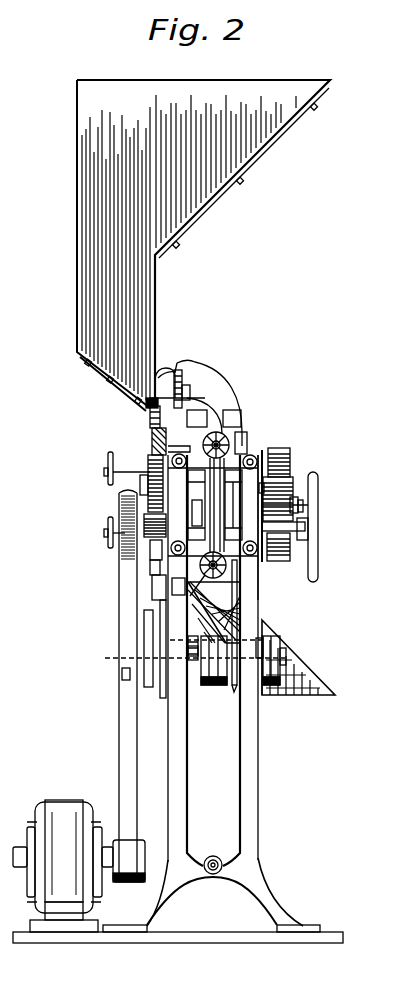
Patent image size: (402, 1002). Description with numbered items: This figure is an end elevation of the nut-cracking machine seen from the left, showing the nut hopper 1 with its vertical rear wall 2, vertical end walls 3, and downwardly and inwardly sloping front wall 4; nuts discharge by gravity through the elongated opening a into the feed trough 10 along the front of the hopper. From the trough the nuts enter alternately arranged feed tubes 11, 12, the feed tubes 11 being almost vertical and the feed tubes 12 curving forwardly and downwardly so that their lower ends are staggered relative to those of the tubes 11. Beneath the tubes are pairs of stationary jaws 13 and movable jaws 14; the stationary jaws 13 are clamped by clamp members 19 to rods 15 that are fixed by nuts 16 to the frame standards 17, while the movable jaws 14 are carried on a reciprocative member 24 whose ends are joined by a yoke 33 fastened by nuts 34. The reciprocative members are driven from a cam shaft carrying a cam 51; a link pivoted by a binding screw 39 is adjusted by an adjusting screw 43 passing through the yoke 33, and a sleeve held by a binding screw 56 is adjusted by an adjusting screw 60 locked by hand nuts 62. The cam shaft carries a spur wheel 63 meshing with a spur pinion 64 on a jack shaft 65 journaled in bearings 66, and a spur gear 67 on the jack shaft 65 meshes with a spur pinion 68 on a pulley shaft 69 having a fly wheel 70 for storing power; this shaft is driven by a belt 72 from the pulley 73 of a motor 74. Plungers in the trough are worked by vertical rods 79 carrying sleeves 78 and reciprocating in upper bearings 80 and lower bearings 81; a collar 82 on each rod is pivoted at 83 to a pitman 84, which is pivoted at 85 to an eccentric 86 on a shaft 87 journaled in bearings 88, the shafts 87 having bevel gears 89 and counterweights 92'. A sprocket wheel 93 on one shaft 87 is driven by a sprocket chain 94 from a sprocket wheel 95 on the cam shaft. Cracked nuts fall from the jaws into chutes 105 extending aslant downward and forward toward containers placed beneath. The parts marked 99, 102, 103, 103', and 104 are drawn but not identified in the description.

The nut hopper 1 is at (74, 203).
The vertical rear wall 2 is at (77, 166).
The vertical end walls 3 is at (100, 246).
The sloping front wall 4 is at (265, 150).
The elongated opening a is at (158, 292).
The feed trough 10 is at (164, 366).
The gate plate 99 is at (183, 368).
The gate slide 102 is at (185, 379).
The gate block 103 is at (227, 389).
The gate stop 103' is at (125, 406).
The gate lever 104 is at (150, 418).
The feed tubes 12 is at (240, 401).
The feed tubes 11 is at (231, 432).
The hand nuts 62 is at (250, 448).
The adjusting screw 60 is at (246, 438).
The nuts 34 is at (228, 458).
The nuts 16 is at (264, 460).
The rods 15 is at (213, 493).
The reciprocative member 24 is at (213, 511).
The spur wheel 63 is at (291, 456).
The bearings 66 is at (291, 485).
The spur pinion 64 is at (298, 492).
The jack shaft 65 is at (303, 500).
The fly wheel 70 is at (320, 500).
The clamp member 19 is at (300, 506).
The pulley shaft 69 is at (300, 530).
The binding screw 56 is at (108, 472).
The binding screw 39 is at (108, 533).
The spur gear 67 is at (149, 458).
The upper bearings 80 is at (152, 442).
The vertical rods 79 is at (152, 430).
The spur pinion 68 is at (144, 521).
The belt 72 is at (119, 726).
The pulley 73 is at (143, 852).
The sleeves 78 is at (150, 551).
The pivot 83 is at (150, 570).
The lower bearings 81 is at (152, 596).
The eccentric 86 is at (144, 632).
The pitman 84 is at (180, 661).
The pivot 85 is at (122, 680).
The sprocket chain 94 is at (245, 616).
The chutes 105 is at (300, 690).
The counterweights 92' is at (243, 678).
The sprocket wheel 93 is at (234, 692).
The bearings 88 is at (200, 630).
The shafts 87 is at (283, 657).
The bevel gears 89 is at (190, 656).
The collar 82 is at (181, 586).
The adjusting screw 43 is at (191, 589).
The yoke 33 is at (188, 505).
The cam 51 is at (191, 513).
The sprocket wheel 95 is at (240, 505).
The movable jaws 14 is at (197, 418).
The stationary jaws 13 is at (232, 418).
The frame standards 17 is at (180, 761).
The motor 74 is at (62, 800).